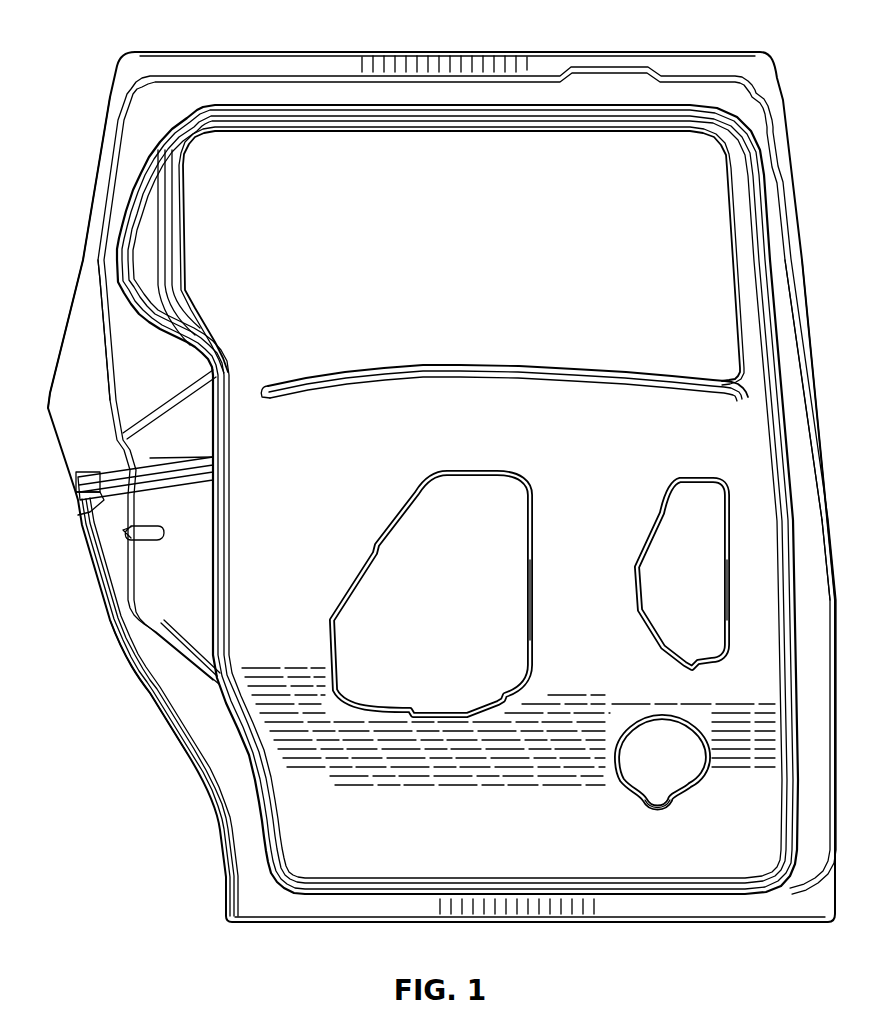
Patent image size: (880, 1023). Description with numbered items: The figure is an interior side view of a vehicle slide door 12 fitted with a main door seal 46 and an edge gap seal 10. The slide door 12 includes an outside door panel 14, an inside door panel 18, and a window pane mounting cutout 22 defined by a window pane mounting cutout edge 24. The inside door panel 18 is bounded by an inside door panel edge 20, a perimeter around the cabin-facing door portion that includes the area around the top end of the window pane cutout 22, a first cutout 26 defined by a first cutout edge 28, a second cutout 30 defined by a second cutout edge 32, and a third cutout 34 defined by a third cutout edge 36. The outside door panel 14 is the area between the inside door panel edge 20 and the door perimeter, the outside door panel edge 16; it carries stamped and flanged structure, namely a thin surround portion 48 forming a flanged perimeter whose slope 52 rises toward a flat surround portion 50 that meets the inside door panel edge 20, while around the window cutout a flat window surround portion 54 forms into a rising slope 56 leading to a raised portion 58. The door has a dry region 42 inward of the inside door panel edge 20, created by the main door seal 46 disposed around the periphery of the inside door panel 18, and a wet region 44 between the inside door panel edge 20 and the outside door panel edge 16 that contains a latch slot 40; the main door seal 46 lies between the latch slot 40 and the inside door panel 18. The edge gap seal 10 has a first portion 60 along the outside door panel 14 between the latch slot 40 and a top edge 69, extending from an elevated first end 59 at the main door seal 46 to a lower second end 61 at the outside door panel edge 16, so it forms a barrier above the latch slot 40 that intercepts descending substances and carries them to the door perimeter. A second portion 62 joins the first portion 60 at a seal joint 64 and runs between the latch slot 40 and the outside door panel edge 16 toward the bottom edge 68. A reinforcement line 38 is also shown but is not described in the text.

The edge gap seal 10 is at (88, 527).
The vehicle slide door 12 is at (466, 51).
The outside door panel 14 is at (124, 62).
The outside door panel edge 16 is at (100, 163).
The inside door panel 18 is at (243, 410).
The inside door panel edge 20 is at (230, 497).
The window pane mounting cutout 22 is at (440, 136).
The window pane mounting cutout edge 24 is at (548, 370).
The first cutout 26 is at (522, 548).
The first cutout edge 28 is at (527, 608).
The second cutout 30 is at (715, 544).
The second cutout edge 32 is at (722, 585).
The third cutout 34 is at (683, 737).
The third cutout edge 36 is at (676, 775).
The reinforcement brace 38 is at (207, 420).
The latch slot 40 is at (160, 532).
The dry region 42 is at (723, 432).
The wet region 44 is at (799, 448).
The main door seal 46 is at (360, 893).
The thin surround portion 48 is at (278, 58).
The flat surround portion 50 is at (78, 393).
The slope of the thin surround portion 52 is at (98, 263).
The flat window surround portion 54 is at (183, 242).
The rising slope of the flat window surround portion 56 is at (175, 277).
The raised portion 58 is at (148, 225).
The first end of the first portion 59 is at (213, 468).
The first portion of the edge gap seal 60 is at (143, 470).
The second end of the first portion 61 is at (80, 480).
The second portion of the edge gap seal 62 is at (173, 705).
The seal joint 64 is at (87, 507).
The bottom edge 68 is at (648, 923).
The top edge 69 is at (678, 51).